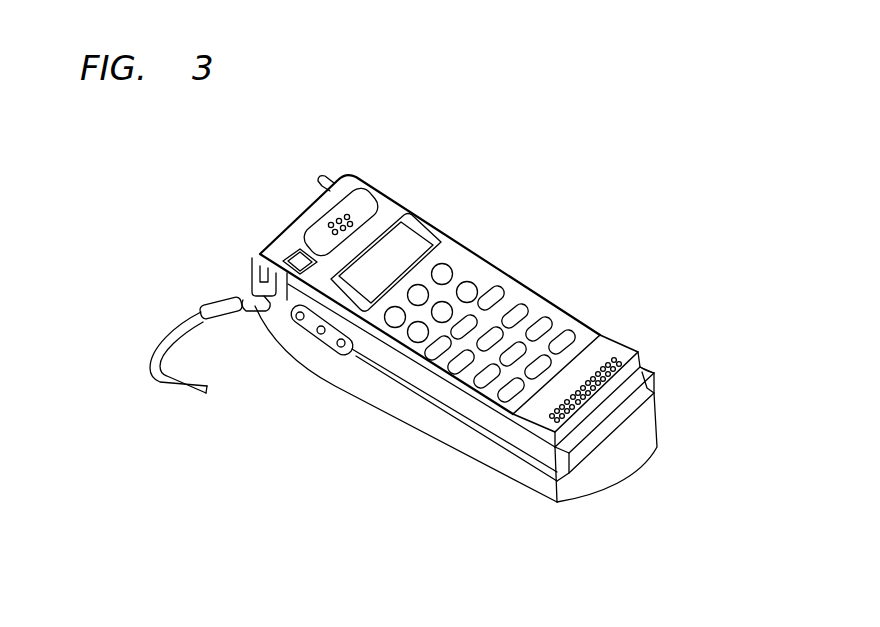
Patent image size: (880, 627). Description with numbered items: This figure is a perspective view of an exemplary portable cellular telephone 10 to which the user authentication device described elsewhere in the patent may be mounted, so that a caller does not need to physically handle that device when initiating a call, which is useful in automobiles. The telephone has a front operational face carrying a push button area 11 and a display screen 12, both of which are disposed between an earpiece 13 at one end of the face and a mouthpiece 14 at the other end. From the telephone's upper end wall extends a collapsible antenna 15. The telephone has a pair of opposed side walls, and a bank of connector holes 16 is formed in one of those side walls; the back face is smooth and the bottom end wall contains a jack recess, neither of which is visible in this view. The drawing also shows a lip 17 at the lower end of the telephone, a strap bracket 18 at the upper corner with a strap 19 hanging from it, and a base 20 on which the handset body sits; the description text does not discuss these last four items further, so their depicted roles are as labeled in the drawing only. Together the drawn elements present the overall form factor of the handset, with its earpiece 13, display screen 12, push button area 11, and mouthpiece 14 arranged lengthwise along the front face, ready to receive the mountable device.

The portable terminal housing 10 is at (503, 260).
The push button area 11 is at (520, 310).
The display screen 12 is at (417, 247).
The earpiece 13 is at (363, 203).
The mouthpiece 14 is at (618, 357).
The collapsible antenna 15 is at (327, 178).
The bank of connector holes 16 is at (318, 326).
The rim of base 17 is at (645, 369).
The strap bracket 18 is at (262, 272).
The strap 19 is at (175, 390).
The base 20 is at (507, 496).